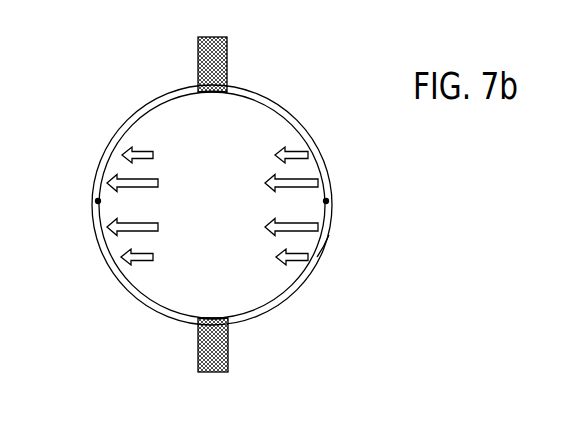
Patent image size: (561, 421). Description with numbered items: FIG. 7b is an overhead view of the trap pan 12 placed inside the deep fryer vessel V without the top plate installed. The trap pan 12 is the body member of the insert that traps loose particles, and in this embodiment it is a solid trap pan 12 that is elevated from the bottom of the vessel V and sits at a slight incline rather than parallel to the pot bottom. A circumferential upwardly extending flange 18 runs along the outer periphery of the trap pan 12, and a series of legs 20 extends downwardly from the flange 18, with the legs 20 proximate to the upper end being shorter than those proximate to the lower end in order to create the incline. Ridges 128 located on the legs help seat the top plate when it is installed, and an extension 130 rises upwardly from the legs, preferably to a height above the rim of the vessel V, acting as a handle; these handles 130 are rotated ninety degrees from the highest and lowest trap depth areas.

The trap pan 12 is at (253, 130).
The circumferential flange 18 is at (312, 141).
The legs 20 is at (98, 200).
The ridges 128 is at (243, 84).
The extension 130 is at (227, 45).
The vessel V is at (333, 230).